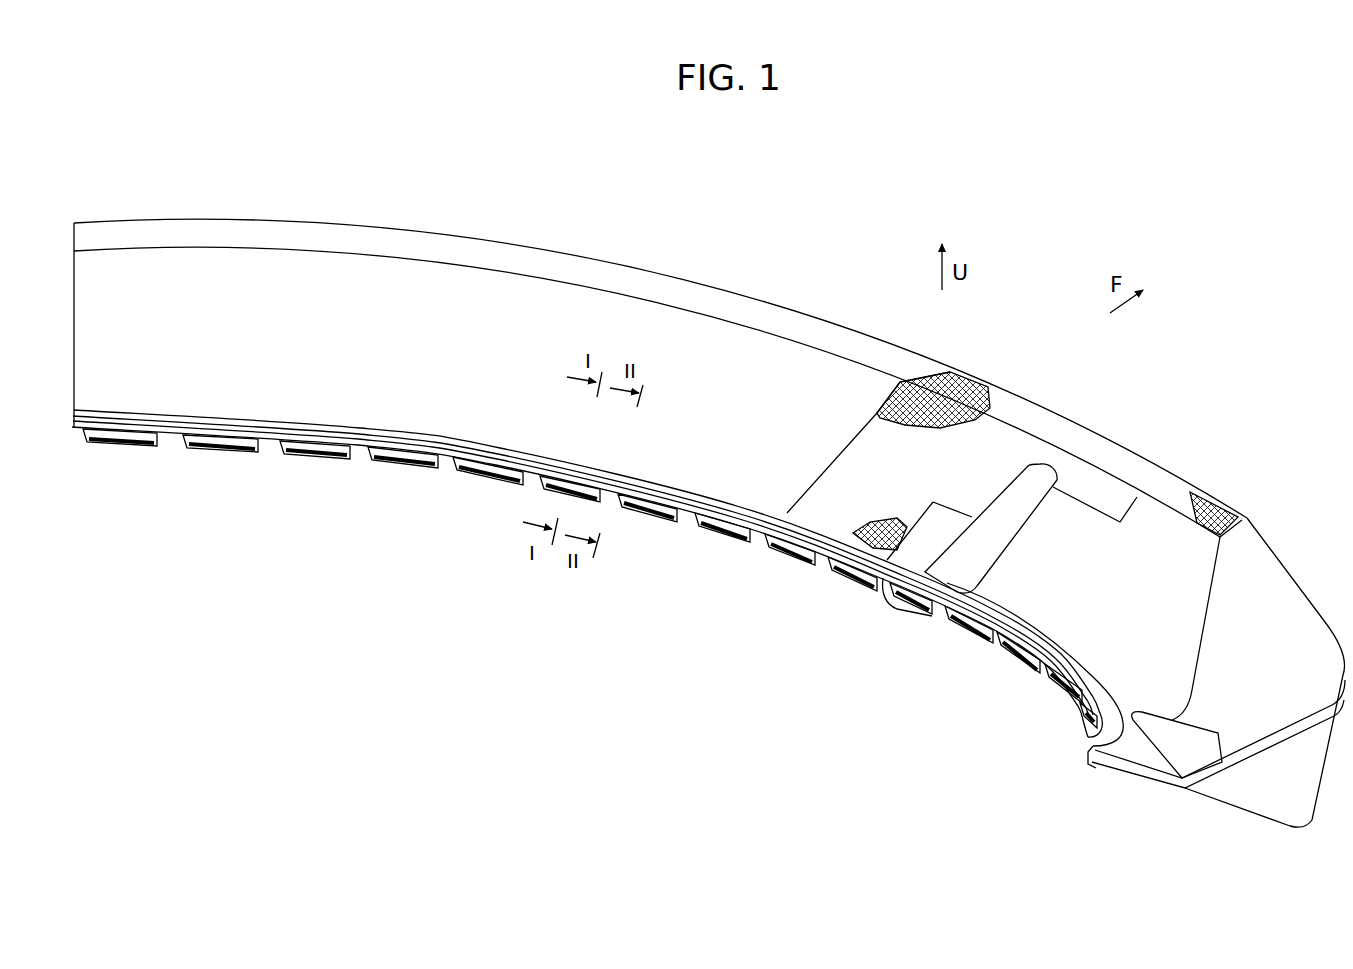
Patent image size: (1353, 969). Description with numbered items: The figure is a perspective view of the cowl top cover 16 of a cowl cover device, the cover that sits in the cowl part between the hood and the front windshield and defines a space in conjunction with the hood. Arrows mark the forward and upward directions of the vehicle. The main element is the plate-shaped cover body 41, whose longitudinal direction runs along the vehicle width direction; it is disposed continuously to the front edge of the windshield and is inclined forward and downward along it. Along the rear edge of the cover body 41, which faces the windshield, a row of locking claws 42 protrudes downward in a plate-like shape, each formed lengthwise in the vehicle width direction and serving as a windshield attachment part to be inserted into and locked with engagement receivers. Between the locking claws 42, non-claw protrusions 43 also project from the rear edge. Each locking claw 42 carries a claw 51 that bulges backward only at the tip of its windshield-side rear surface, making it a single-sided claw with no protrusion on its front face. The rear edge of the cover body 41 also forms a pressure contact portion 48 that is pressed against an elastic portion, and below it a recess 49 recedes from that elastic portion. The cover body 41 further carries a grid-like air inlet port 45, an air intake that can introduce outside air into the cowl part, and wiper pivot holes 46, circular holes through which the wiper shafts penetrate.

The cowl top cover 16 is at (727, 263).
The cover body 41 is at (617, 323).
The locking claws 42 is at (648, 513).
The protrusions 43 is at (675, 502).
The grid-like air inlet port 45 is at (988, 443).
The wiper pivot holes 46 is at (957, 567).
The pressure contact portion 48 is at (765, 517).
The recess 49 is at (587, 487).
The claw 51 is at (553, 478).